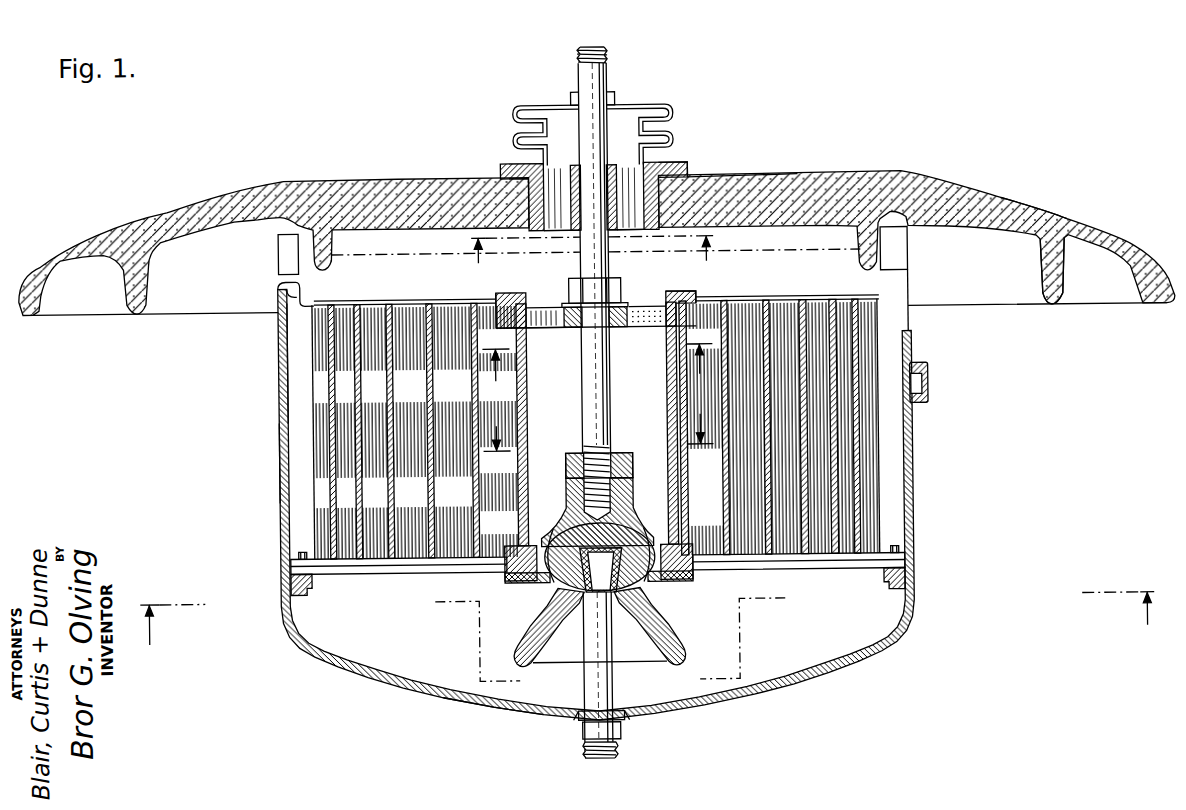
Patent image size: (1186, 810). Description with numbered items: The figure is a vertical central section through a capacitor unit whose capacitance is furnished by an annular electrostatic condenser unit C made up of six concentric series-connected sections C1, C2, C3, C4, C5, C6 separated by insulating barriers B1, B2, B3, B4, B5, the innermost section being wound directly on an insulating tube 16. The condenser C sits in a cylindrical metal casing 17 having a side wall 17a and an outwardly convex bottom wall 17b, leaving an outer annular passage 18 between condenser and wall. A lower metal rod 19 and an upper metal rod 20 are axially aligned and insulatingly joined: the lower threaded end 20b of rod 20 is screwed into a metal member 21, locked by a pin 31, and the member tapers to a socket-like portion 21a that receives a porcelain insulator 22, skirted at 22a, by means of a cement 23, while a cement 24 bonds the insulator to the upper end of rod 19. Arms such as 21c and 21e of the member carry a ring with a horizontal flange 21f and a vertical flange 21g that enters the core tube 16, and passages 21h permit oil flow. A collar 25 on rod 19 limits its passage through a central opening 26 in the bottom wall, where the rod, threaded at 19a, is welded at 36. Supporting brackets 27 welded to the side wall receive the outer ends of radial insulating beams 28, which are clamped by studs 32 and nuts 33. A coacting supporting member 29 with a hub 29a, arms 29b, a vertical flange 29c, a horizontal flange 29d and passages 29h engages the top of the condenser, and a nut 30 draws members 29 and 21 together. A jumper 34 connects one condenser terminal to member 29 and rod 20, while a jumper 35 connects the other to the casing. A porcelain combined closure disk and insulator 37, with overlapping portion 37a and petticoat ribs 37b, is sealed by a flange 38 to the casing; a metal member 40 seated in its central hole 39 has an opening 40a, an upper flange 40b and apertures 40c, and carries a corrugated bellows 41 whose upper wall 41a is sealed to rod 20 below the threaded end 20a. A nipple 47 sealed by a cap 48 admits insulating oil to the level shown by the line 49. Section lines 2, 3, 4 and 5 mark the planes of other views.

The section line 2- 2 is at (647, 612).
The section line 3- 3 is at (590, 242).
The section line 4- 4 is at (596, 353).
The section line 5- 5 is at (599, 445).
The insulating cylinder or tube 16 is at (523, 388).
The metal tank or casing 17 is at (284, 624).
The cylindrical side wall 17a is at (287, 461).
The outwardly convex bottom wall 17b is at (450, 700).
The outer annular passage or channel 18 is at (296, 354).
The lower metal rod 19 is at (600, 642).
The threaded lower end of rod 19 19a is at (601, 758).
The upper metal rod 20 is at (597, 392).
The uppermost threaded end portion of rod 20 20a is at (592, 46).
The lower threaded end of rod 20 20b is at (594, 455).
The metal member 21 is at (570, 490).
The socket-like portion 21a is at (560, 524).
The arm of member 21 21c is at (667, 537).
The arm of member 21 21e is at (540, 547).
The horizontal flange 21f is at (694, 578).
The vertical flange 21g is at (677, 550).
The passages in member 21 21h is at (520, 580).
The insulator 22 is at (643, 607).
The bell-shaped skirt of insulator 22 22a is at (558, 663).
The cement 23 is at (637, 540).
The cement 24 is at (580, 585).
The collar 25 is at (601, 713).
The central opening 26 is at (621, 720).
The supporting brackets 27 is at (305, 581).
The insulating spacers and supports (beams) 28 is at (376, 566).
The coacting supporting member 29 is at (532, 296).
The central hub 29a is at (575, 328).
The arms of member 29 29b is at (556, 297).
The vertically extending flange 29c is at (662, 322).
The horizontally extending flange 29d is at (690, 293).
The apertures or passages in member 29 29h is at (528, 330).
The nut 30 is at (599, 284).
The pin 31 is at (633, 458).
The threaded stud 32 is at (300, 551).
The nuts 33 is at (298, 553).
The conductor or jumper 34 is at (496, 292).
The jumper 35 is at (299, 306).
The weld 36 is at (580, 725).
The combined closure disk and insulator 37 is at (333, 172).
The overlapping portion 37a is at (1043, 222).
The petticoat or rib 37b is at (1054, 310).
The flange 38 is at (302, 241).
The hole 39 is at (664, 206).
The metal member 40 is at (545, 165).
The central opening 40a is at (577, 193).
The upper peripheral flange 40b is at (691, 172).
The apertures 40c is at (542, 231).
The corrugated sheet metal bellows 41 is at (540, 131).
The upper wall of bellows 41a is at (564, 104).
The pipe connection or nipple 47 is at (908, 370).
The plug or cap 48 is at (926, 387).
The liquid level line 49 is at (366, 252).
The electrostatic condenser unit C is at (553, 429).
The condenser section C1 is at (498, 431).
The condenser section C2 is at (453, 431).
The condenser section C3 is at (410, 432).
The condenser section C4 is at (375, 432).
The condenser section C5 is at (347, 433).
The condenser section C6 is at (323, 433).
The insulating barrier B1 is at (462, 430).
The insulating barrier B2 is at (417, 431).
The insulating barrier B3 is at (382, 431).
The insulating barrier B4 is at (352, 432).
The insulating barrier B5 is at (325, 432).